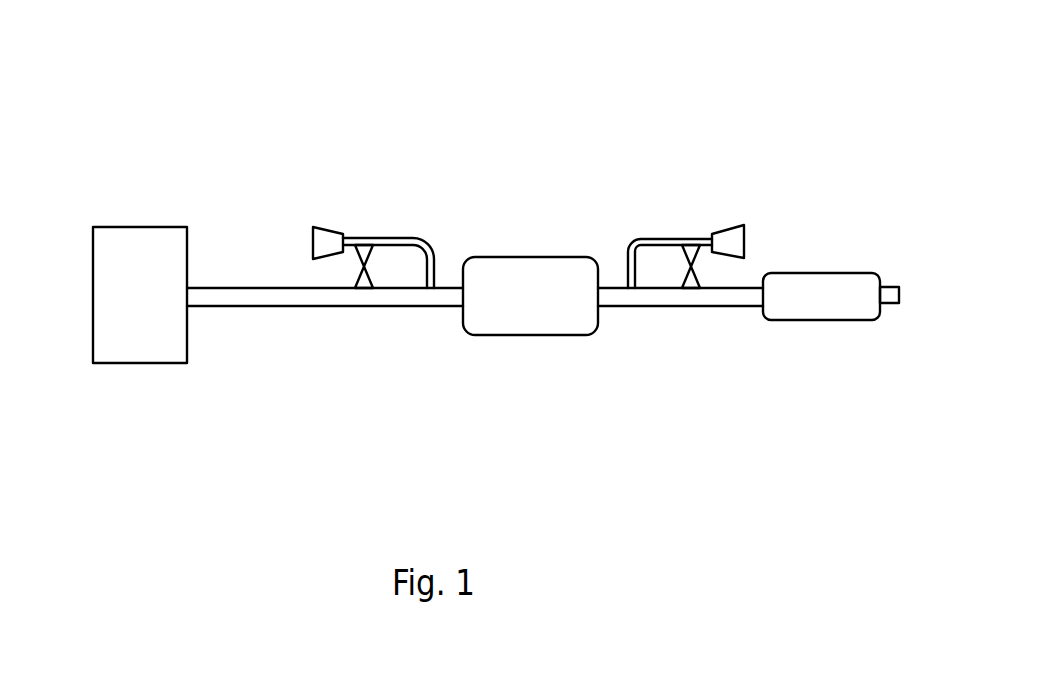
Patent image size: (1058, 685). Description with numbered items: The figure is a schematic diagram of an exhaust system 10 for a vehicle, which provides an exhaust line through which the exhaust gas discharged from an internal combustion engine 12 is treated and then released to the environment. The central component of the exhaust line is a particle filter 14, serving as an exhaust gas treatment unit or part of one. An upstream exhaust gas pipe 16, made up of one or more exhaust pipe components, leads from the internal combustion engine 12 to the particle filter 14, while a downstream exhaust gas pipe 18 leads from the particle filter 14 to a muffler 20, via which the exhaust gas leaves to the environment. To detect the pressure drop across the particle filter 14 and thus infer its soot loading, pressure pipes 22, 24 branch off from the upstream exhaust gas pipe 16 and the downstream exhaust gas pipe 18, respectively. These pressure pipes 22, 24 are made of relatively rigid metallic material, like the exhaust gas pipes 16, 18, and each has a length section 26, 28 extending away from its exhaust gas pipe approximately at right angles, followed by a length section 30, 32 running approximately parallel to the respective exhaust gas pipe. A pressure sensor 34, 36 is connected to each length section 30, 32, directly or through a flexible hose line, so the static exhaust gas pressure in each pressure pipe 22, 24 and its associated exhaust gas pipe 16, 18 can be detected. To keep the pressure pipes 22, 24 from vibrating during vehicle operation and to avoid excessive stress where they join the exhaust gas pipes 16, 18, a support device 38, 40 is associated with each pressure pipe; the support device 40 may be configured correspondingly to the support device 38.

The exhaust system 10 is at (660, 113).
The internal combustion engine 12 is at (157, 363).
The particle filter 14 is at (528, 335).
The upstream exhaust gas pipe 16 is at (250, 307).
The downstream exhaust gas pipe 18 is at (730, 307).
The muffler 20 is at (825, 320).
The pressure pipe 22 is at (410, 238).
The pressure pipe 24 is at (660, 240).
The length section 26 is at (440, 275).
The length section 28 is at (622, 250).
The length section 30 is at (367, 238).
The length section 32 is at (705, 238).
The pressure sensor 34 is at (310, 237).
The pressure sensor 36 is at (745, 238).
The support device 38 is at (367, 262).
The support device 40 is at (683, 272).